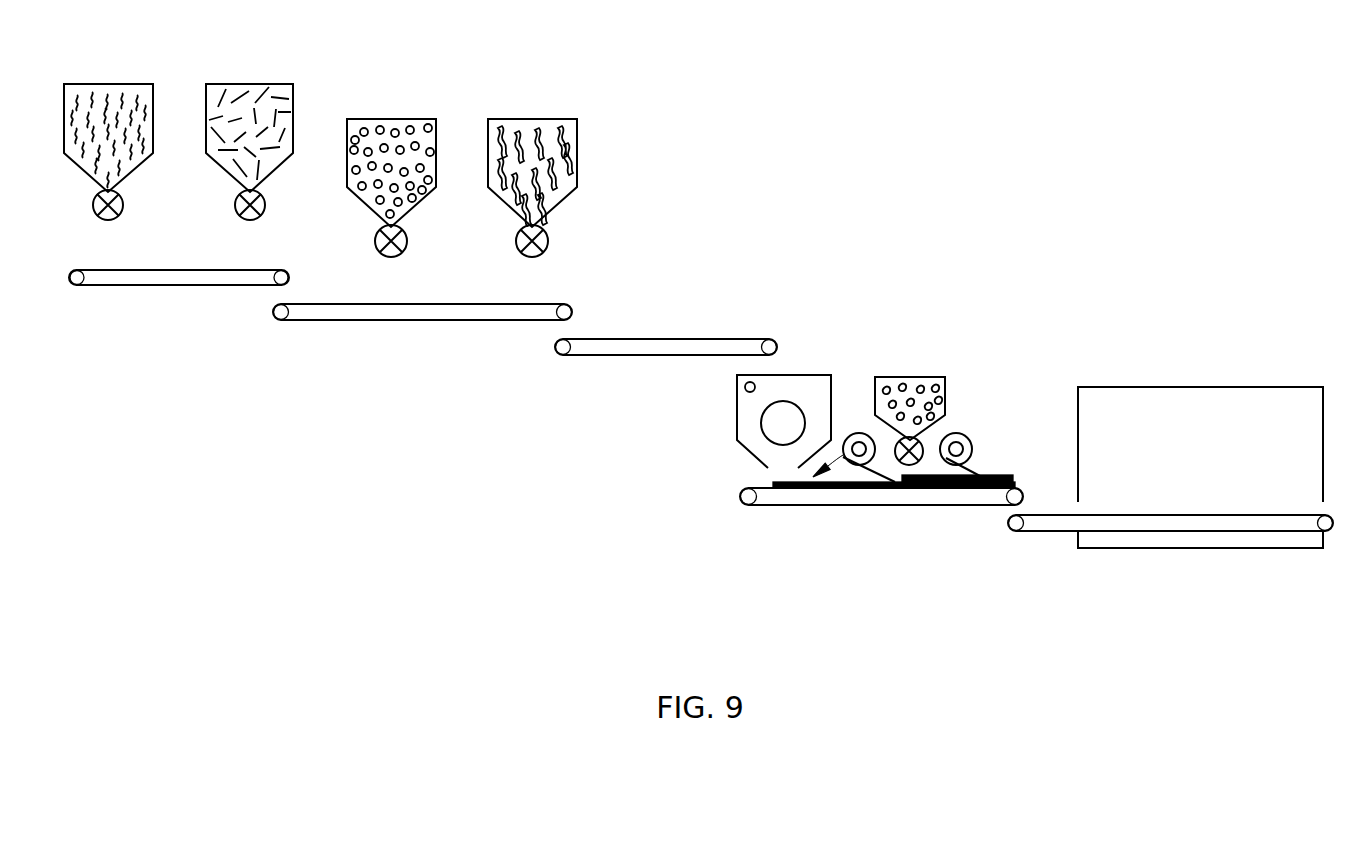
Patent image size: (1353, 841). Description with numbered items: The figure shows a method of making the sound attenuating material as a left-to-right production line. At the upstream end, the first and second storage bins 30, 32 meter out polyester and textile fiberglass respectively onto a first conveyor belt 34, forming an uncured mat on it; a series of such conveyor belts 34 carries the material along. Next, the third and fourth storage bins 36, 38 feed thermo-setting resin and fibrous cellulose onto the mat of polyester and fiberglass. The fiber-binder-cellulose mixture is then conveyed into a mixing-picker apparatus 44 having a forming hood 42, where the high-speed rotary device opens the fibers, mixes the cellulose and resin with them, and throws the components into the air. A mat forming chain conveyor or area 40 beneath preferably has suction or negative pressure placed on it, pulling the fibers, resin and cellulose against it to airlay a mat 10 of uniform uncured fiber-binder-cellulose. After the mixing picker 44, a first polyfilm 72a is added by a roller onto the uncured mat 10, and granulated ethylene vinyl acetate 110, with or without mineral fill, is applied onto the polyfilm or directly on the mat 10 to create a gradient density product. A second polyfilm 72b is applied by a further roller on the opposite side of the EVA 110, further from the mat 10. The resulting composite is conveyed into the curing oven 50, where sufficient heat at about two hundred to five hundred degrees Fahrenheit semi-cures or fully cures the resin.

The first storage bin 30 is at (107, 85).
The second storage bin 32 is at (247, 84).
The first conveyor belt 34 is at (157, 319).
The third storage bin 36 is at (392, 122).
The fourth storage bin 38 is at (545, 125).
The mat forming conveyor 40 is at (795, 505).
The forming hood 42 is at (830, 373).
The mixing-picker apparatus 44 is at (805, 333).
The curing oven 50 is at (1197, 360).
The mat 10 is at (855, 482).
The first polyfilm layer 72a is at (883, 468).
The second polyfilm layer 72b is at (978, 478).
The granulated ethylene vinyl acetate 110 is at (907, 378).